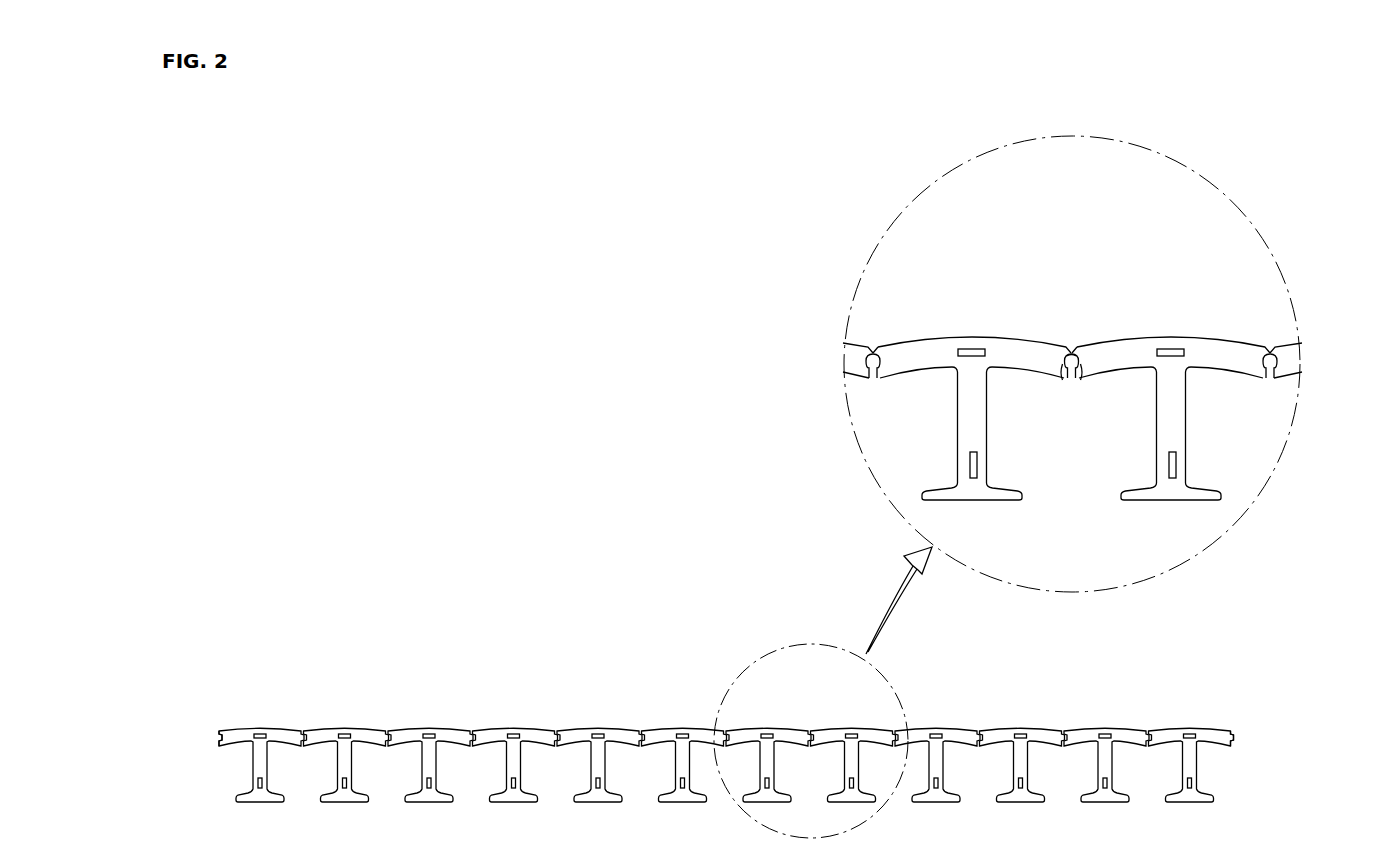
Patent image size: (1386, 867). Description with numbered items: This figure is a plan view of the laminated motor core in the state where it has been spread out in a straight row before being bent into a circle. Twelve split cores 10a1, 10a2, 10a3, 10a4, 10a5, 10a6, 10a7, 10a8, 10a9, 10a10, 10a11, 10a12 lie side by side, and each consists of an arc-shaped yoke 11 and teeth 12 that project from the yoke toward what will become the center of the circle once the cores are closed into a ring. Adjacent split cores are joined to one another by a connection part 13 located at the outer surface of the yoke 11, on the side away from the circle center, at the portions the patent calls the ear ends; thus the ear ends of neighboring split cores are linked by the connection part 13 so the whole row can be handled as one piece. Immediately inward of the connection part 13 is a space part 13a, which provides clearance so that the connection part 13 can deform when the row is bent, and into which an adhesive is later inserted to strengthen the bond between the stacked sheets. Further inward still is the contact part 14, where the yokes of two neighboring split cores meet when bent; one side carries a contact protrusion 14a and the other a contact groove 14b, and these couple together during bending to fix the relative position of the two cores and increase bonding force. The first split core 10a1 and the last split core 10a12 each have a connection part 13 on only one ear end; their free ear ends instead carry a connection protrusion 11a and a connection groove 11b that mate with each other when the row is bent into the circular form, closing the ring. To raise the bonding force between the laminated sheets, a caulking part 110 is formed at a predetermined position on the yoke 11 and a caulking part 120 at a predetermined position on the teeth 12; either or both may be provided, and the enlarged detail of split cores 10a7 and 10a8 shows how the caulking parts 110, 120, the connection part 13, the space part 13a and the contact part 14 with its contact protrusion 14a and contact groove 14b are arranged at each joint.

The first split core 10a1 is at (261, 736).
The split core 10a2 is at (346, 736).
The split core 10a3 is at (430, 736).
The split core 10a4 is at (515, 736).
The split core 10a5 is at (599, 736).
The split core 10a6 is at (684, 736).
The split core 10a7 is at (898, 527).
The split core 10a8 is at (1041, 535).
The split core 10a9 is at (937, 736).
The split core 10a10 is at (1022, 736).
The split core 10a11 is at (1106, 736).
The last split core 10a12 is at (1191, 736).
The yoke 11 is at (903, 350).
The connection protrusion 11a is at (1236, 742).
The connection groove 11b is at (218, 742).
The teeth 12 is at (973, 422).
The connection part 13 is at (1067, 347).
The space part 13a is at (1063, 347).
The contact part 14 is at (1065, 398).
The contact protrusion 14a is at (1067, 370).
The contact groove 14b is at (1083, 373).
The caulking part 110 is at (950, 353).
The caulking part 120 is at (970, 467).